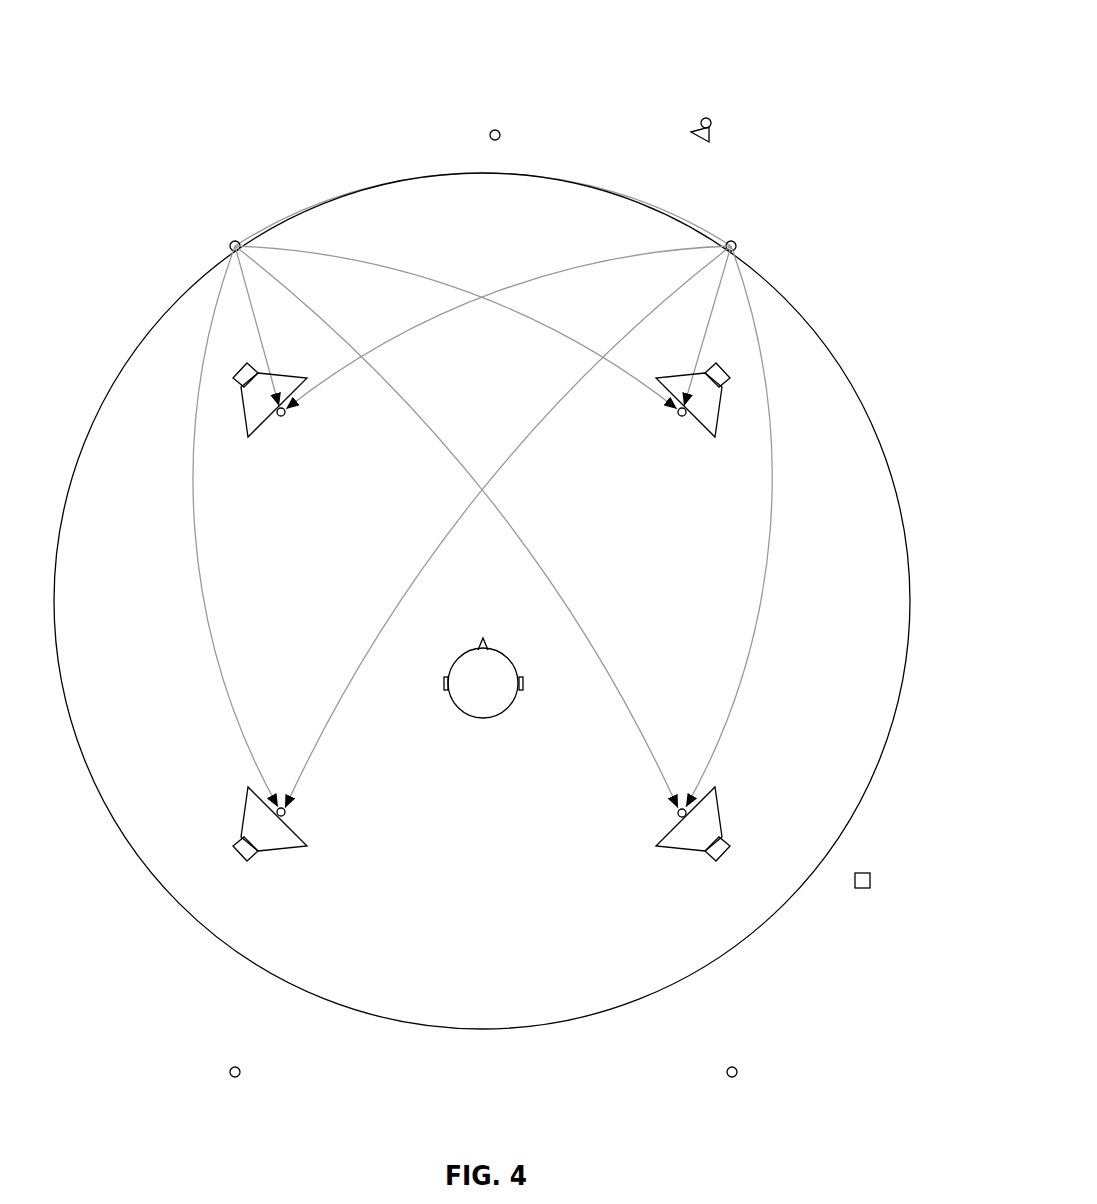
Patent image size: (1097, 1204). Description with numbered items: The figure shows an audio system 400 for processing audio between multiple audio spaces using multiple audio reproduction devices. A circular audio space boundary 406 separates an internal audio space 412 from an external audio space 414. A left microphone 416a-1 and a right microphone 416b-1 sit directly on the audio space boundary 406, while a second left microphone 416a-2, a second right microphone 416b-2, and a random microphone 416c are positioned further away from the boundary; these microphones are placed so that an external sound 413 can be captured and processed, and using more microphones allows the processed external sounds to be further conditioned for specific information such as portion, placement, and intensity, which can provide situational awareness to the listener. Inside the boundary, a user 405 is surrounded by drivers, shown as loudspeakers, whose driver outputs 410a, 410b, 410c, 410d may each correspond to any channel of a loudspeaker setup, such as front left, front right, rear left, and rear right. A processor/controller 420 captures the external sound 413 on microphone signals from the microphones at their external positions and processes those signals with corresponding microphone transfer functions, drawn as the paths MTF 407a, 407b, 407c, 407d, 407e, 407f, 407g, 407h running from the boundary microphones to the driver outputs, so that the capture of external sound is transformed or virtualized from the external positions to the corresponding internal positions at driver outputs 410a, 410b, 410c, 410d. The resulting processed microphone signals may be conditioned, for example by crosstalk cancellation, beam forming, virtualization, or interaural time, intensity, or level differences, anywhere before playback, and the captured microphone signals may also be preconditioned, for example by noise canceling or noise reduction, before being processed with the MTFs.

The audio system 400 is at (852, 62).
The user 405 is at (468, 706).
The audio space boundary 406 is at (862, 400).
The MTF 407a is at (196, 563).
The MTF 407b is at (258, 338).
The MTF 407c is at (446, 448).
The MTF 407d is at (551, 330).
The MTF 407e is at (767, 565).
The MTF 407f is at (706, 338).
The MTF 407g is at (519, 450).
The MTF 407h is at (393, 338).
The driver output 410a is at (285, 418).
The driver output 410b is at (679, 418).
The driver output 410c is at (288, 812).
The driver output 410d is at (677, 813).
The internal audio space 412 is at (469, 970).
The external sound 413 is at (707, 118).
The external audio space 414 is at (124, 108).
The left microphone 416a-1 is at (234, 241).
The left microphone 416a-2 is at (233, 1066).
The right microphone 416b-1 is at (731, 241).
The right microphone 416b-2 is at (734, 1066).
The random microphone 416c is at (494, 130).
The processor/controller 420 is at (870, 888).